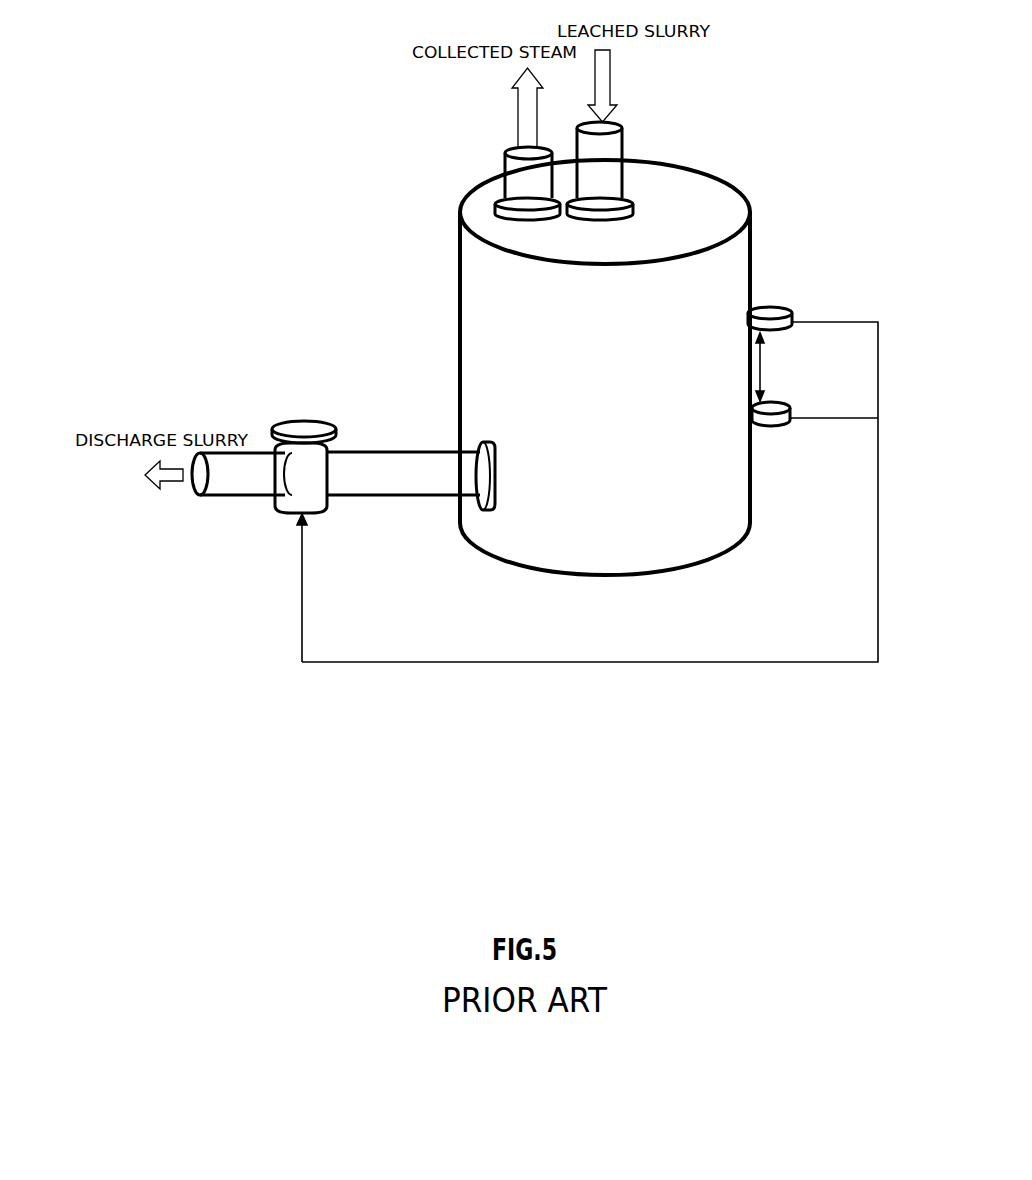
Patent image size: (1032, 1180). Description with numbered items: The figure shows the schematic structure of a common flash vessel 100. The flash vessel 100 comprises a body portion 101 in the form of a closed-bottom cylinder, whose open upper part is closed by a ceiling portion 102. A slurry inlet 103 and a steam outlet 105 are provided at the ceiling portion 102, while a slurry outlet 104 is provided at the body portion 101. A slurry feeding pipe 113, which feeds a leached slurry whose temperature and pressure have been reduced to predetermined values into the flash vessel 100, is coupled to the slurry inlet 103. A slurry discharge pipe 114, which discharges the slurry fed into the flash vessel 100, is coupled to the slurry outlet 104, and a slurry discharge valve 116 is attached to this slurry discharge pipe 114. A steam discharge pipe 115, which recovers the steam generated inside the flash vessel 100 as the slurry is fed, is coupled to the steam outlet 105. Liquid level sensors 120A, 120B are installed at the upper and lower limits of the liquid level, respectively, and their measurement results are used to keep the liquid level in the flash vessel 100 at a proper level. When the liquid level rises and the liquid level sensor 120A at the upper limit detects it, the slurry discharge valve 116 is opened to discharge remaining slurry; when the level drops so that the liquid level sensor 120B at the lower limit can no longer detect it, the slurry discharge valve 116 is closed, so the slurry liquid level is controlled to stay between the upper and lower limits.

The flash vessel 100 is at (383, 699).
The body portion 101 is at (735, 283).
The ceiling portion 102 is at (727, 208).
The slurry inlet 103 is at (623, 199).
The slurry outlet 104 is at (460, 508).
The steam outlet 105 is at (497, 202).
The slurry feeding pipe 113 is at (622, 125).
The slurry discharge pipe 114 is at (360, 448).
The steam discharge pipe 115 is at (503, 165).
The slurry discharge valve 116 is at (303, 420).
The liquid level sensor 120A is at (788, 308).
The liquid level sensor 120B is at (788, 430).